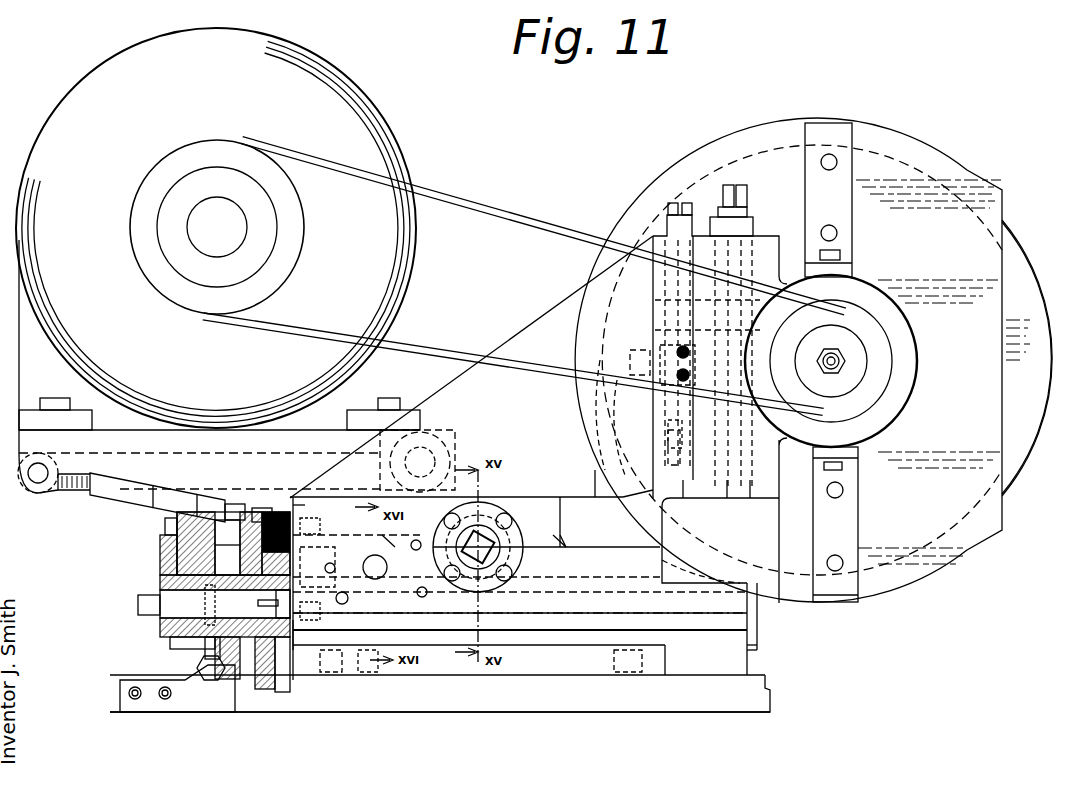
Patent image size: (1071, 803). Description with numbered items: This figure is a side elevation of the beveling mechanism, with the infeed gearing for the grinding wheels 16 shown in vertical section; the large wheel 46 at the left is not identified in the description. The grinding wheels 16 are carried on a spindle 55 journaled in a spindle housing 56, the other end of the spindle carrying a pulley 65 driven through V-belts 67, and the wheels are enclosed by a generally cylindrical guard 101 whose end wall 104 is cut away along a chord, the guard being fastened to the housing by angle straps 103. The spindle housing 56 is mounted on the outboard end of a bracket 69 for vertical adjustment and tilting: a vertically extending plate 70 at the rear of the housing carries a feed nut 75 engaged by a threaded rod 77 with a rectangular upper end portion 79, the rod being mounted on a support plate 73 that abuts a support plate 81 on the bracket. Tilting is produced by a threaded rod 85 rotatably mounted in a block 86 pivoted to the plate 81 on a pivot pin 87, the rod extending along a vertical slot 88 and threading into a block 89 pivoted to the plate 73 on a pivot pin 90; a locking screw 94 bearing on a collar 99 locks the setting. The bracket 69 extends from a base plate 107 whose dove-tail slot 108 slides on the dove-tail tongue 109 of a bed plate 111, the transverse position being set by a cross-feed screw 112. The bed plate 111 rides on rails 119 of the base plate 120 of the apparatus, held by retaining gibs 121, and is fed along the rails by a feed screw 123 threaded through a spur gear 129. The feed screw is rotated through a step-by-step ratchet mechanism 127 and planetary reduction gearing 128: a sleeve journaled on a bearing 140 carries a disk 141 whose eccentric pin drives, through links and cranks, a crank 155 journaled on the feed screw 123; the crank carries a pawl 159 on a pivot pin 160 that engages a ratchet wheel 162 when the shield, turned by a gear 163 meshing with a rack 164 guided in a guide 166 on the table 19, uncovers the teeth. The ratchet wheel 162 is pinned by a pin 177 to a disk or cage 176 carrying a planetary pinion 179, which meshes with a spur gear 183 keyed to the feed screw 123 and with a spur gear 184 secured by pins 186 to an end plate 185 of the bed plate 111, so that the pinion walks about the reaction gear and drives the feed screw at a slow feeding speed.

The grinding wheels 16 is at (1030, 250).
The base plate or table 19 is at (760, 672).
The drive wheel 46 is at (398, 140).
The spindle 55 is at (838, 352).
The spindle housing 56 is at (912, 332).
The pulley 65 is at (875, 386).
The V-belts 67 is at (460, 208).
The outboard support bracket 69 is at (566, 305).
The vertically extending plate 70 is at (750, 486).
The support plate 73 is at (725, 484).
The feed nut 75 is at (780, 328).
The threaded rod 77 is at (752, 208).
The rectangular upper end portion 79 is at (742, 185).
The support plate 81 is at (683, 482).
The threaded rod 85 is at (667, 203).
The block 86 is at (716, 183).
The pivot pin 87 is at (660, 226).
The vertical slot or recess 88 is at (668, 432).
The nut or block 89 is at (664, 323).
The pivot pin 90 is at (678, 298).
The locking screw 94 is at (592, 397).
The collar 99 is at (612, 425).
The guard 101 is at (930, 585).
The angle straps 103 is at (853, 226).
The end wall 104 is at (905, 150).
The base plate 107 is at (598, 497).
The dove-tail slot 108 is at (566, 520).
The dove-tail tongue 109 is at (555, 548).
The bed plate 111 is at (648, 552).
The cross-feed screw 112 is at (492, 522).
The rails 119 is at (708, 575).
The base plate 120 is at (732, 651).
The retaining gibs 121 is at (645, 619).
The feed screw 123 is at (155, 612).
The step-by-step ratchet mechanism 127 is at (176, 565).
The planetary reduction gearing 128 is at (268, 652).
The spur gear 129 is at (368, 672).
The bearing 140 is at (203, 510).
The disk 141 is at (182, 530).
The crank 155 is at (165, 548).
The pawl 159 is at (232, 512).
The pivot pin 160 is at (262, 518).
The ratchet wheel 162 is at (230, 690).
The gear 163 is at (174, 576).
The rack 164 is at (205, 641).
The guide 166 is at (208, 660).
The disk or cage 176 is at (238, 690).
The pin 177 is at (258, 692).
The planetary pinion 179 is at (300, 514).
The spur gear 183 is at (268, 700).
The spur gear 184 is at (280, 655).
The end plate 185 is at (300, 640).
The pins 186 is at (290, 562).